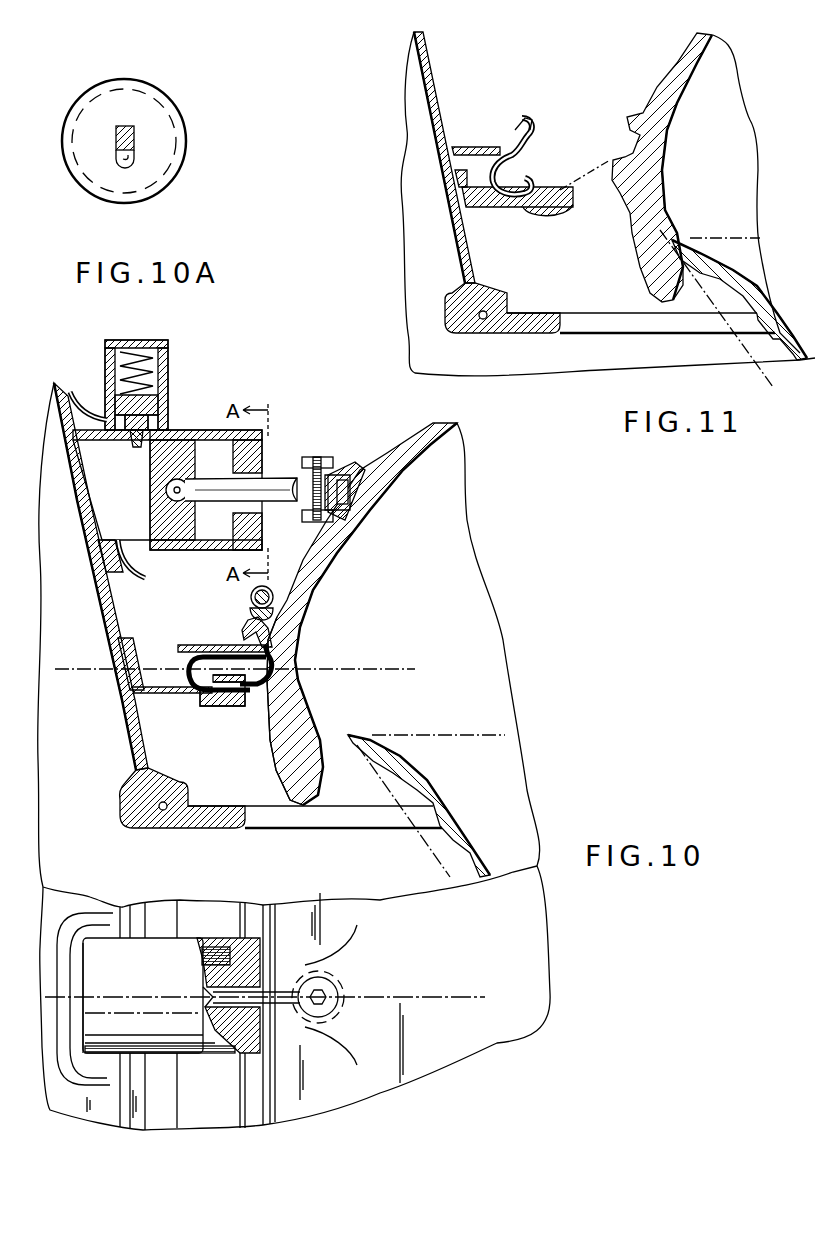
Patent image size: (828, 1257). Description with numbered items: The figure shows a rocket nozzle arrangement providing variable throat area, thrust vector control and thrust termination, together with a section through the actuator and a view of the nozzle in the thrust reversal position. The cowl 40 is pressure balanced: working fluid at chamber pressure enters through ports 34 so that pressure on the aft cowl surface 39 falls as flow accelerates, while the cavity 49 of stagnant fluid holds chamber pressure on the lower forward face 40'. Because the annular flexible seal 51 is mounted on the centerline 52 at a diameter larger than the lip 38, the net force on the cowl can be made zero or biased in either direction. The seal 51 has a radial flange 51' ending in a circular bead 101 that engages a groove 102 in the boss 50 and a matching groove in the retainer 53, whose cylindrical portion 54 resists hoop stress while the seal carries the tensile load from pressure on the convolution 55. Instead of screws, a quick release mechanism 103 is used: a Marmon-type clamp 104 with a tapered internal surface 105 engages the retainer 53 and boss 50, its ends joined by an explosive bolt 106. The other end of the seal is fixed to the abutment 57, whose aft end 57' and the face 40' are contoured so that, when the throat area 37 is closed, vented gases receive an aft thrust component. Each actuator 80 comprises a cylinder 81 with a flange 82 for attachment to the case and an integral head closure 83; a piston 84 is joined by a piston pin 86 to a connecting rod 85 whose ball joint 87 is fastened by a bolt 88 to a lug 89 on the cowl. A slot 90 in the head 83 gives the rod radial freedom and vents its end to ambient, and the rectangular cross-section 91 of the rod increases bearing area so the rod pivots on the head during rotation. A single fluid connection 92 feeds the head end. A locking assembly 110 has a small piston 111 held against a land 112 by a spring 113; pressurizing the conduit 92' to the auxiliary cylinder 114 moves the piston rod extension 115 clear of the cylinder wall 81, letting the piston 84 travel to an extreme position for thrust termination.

In FIG. 10, the ports 34 is at (285, 832).
In FIG. 11, the ports 34 is at (614, 330).
In FIG. 10, the throat area 37 is at (319, 752).
In FIG. 10, the lip 38 is at (348, 737).
In FIG. 11, the lip 38 is at (668, 240).
In FIG. 10, the cowl surface 39 is at (398, 480).
In FIG. 11, the cowl surface 39 is at (675, 107).
In FIG. 10, the cowl 40 is at (362, 604).
In FIG. 11, the cowl 40 is at (662, 167).
In FIG. 11, the lower forward face of cowl 40' is at (613, 255).
In FIG. 10, the cavity 49 is at (236, 783).
In FIG. 11, the cavity 49 is at (556, 294).
In FIG. 10, the boss 50 is at (290, 682).
In FIG. 10, the flexible seal 51 is at (228, 693).
In FIG. 11, the flexible seal 51 is at (531, 156).
In FIG. 10, the radial flange of seal 51' is at (320, 651).
In FIG. 10, the centerline 52 is at (242, 662).
In FIG. 10, the retainer 53 is at (245, 631).
In FIG. 11, the retainer 53 is at (520, 128).
In FIG. 10, the cylindrical portion 54 is at (200, 645).
In FIG. 10, the convolution 55 is at (190, 667).
In FIG. 10, the abutment 57 is at (172, 709).
In FIG. 11, the aft end of abutment 57' is at (521, 210).
In FIG. 10, the actuator 80 is at (228, 431).
In FIG. 10, the cylinder 81 is at (190, 431).
In FIG. 10, the flange 82 is at (63, 390).
In FIG. 10, the head closure 83 is at (265, 460).
In FIG. 10A, the head closure 83 is at (148, 108).
In FIG. 10, the piston 84 is at (151, 530).
In FIG. 10, the connecting rod 85 is at (232, 502).
In FIG. 10, the piston pin 86 is at (175, 491).
In FIG. 10, the ball joint 87 is at (333, 476).
In FIG. 10, the bolt 88 is at (314, 457).
In FIG. 10, the lug 89 is at (368, 462).
In FIG. 10, the slot 90 is at (264, 524).
In FIG. 10A, the slot 90 is at (130, 160).
In FIG. 10A, the rectangular cross-section 91 is at (136, 141).
In FIG. 10, the fluid connection 92 is at (149, 564).
In FIG. 10, the conduit 92' is at (88, 388).
In FIG. 10, the circular bead 101 is at (278, 630).
In FIG. 10, the groove 102 is at (278, 641).
In FIG. 10, the quick release mechanism 103 is at (276, 606).
In FIG. 10, the clamp 104 is at (250, 613).
In FIG. 10, the tapered internal surface 105 is at (275, 617).
In FIG. 10, the explosive bolt 106 is at (250, 596).
In FIG. 11, the explosive bolt 106 is at (602, 168).
In FIG. 10, the auxiliary piston and cylinder assembly 110 is at (165, 352).
In FIG. 10, the small piston 111 is at (160, 403).
In FIG. 10, the land 112 is at (148, 428).
In FIG. 10, the spring 113 is at (118, 360).
In FIG. 10, the auxiliary cylinder 114 is at (151, 342).
In FIG. 10, the piston rod extension 115 is at (133, 447).